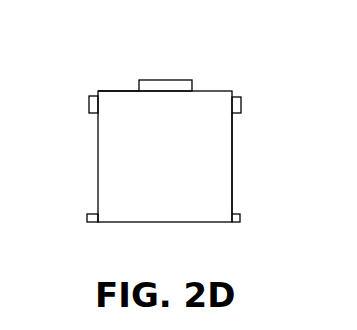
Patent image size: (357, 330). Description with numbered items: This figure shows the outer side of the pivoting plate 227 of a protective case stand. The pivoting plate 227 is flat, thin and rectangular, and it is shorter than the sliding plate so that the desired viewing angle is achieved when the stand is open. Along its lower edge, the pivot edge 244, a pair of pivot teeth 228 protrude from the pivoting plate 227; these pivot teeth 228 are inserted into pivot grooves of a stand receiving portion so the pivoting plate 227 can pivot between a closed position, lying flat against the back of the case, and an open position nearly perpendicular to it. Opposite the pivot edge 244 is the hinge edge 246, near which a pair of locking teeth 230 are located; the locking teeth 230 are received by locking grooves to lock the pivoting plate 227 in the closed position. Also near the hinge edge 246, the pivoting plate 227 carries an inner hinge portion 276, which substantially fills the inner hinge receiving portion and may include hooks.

The pivot edge 244 is at (165, 223).
The inner hinge portion 276 is at (172, 80).
The hinge edge 246 is at (116, 91).
The locking teeth 230 is at (89, 100).
The pivoting plate 227 is at (233, 123).
The pivot teeth 228 is at (86, 215).